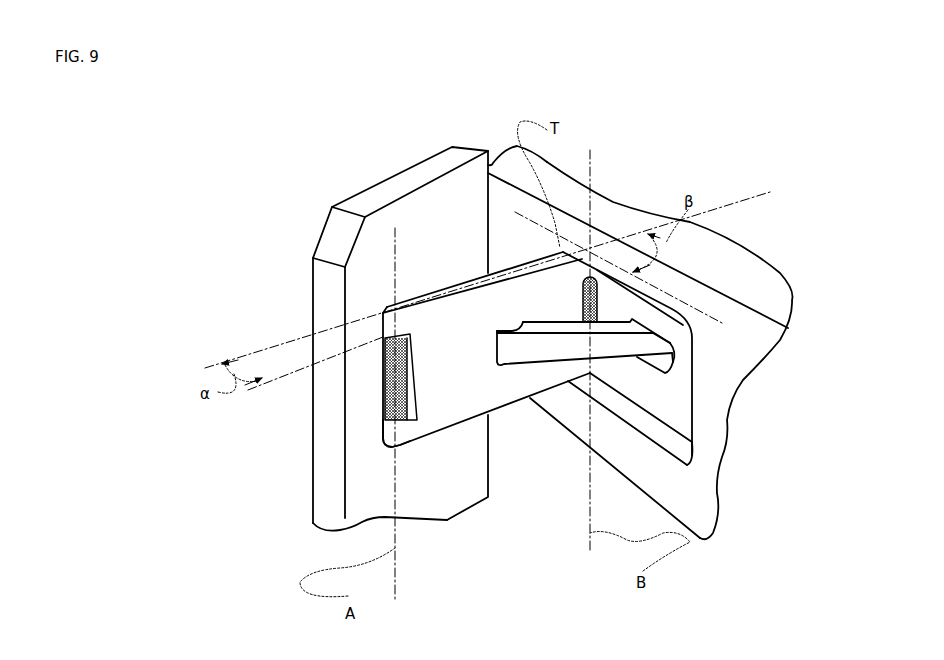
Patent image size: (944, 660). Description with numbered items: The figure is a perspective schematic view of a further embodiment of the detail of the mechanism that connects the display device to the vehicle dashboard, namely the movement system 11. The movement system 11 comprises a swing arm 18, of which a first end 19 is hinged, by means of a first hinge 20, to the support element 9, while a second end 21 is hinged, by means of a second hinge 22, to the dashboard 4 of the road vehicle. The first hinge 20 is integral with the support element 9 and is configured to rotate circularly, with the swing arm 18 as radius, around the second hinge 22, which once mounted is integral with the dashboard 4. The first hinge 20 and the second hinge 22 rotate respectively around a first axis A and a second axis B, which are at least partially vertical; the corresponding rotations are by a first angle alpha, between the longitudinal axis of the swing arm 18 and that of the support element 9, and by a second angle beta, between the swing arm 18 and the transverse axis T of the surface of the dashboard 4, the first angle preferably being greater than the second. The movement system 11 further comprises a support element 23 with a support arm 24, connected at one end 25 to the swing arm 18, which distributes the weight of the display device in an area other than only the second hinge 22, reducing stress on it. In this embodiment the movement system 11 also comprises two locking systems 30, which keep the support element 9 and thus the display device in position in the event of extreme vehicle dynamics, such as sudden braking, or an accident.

The dashboard 4 is at (773, 288).
The support element 9 is at (433, 205).
The movement system 11 is at (683, 167).
The swing arm 18 is at (490, 402).
The first end 19 is at (418, 423).
The first hinge 20 is at (383, 387).
The second end 21 is at (603, 296).
The second hinge 22 is at (655, 330).
The support element 23 is at (672, 340).
The support arm 24 is at (617, 357).
The end 25 is at (510, 323).
The locking system 30 is at (382, 360).